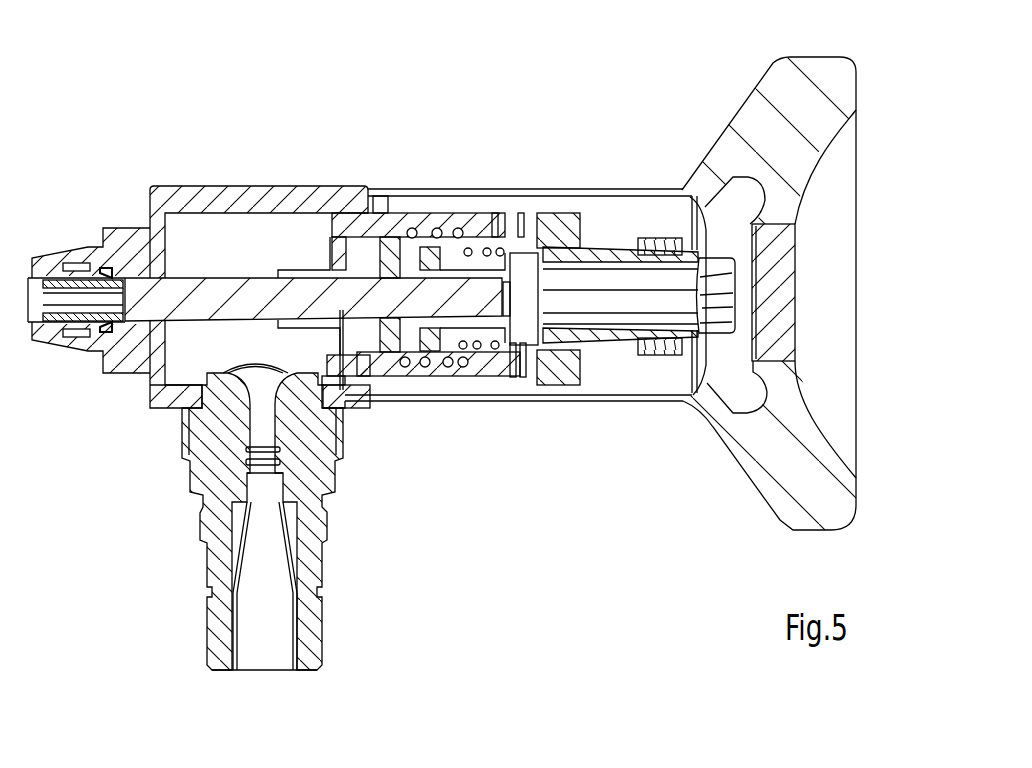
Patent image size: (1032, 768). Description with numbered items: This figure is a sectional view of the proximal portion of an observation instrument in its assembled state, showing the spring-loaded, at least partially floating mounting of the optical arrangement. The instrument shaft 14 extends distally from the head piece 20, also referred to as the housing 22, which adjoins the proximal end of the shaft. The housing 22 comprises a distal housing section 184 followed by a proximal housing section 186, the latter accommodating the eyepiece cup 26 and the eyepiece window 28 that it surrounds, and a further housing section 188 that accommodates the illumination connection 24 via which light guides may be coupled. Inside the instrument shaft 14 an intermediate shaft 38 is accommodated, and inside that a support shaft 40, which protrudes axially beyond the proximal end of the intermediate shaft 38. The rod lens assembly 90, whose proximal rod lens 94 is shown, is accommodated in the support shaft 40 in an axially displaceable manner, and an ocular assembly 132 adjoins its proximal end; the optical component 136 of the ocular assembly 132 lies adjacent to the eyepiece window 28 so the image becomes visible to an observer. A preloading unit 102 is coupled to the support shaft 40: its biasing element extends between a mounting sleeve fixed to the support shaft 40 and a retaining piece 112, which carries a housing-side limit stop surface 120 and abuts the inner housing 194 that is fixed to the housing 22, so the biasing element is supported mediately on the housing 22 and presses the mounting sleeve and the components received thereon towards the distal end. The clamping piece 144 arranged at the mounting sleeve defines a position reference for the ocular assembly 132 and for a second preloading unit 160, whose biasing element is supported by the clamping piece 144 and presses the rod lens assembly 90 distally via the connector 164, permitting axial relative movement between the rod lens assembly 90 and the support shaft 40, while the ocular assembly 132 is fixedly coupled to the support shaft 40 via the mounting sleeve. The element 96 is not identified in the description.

The instrument shaft 14 is at (55, 350).
The head piece 20 is at (593, 122).
The housing 22 is at (423, 233).
The illumination connection 24 is at (282, 614).
The eyepiece cup 26 is at (810, 308).
The eyepiece window 28 is at (772, 310).
The intermediate shaft 38 is at (155, 400).
The support shaft 40 is at (347, 394).
The rod lens assembly 90 is at (224, 272).
The proximal rod lens 94 is at (178, 290).
The inlet tube 96 is at (42, 262).
The preloading unit 102 is at (410, 388).
The retaining piece 112 is at (505, 366).
The housing-side limit stop surface 120 is at (503, 366).
The ocular assembly 132 is at (620, 236).
The optical component 136 is at (697, 402).
The clamping piece 144 is at (568, 212).
The preloading unit 160 is at (540, 286).
The connector 164 is at (473, 358).
The distal housing section 184 is at (318, 196).
The proximal housing section 186 is at (532, 198).
The housing section 188 is at (220, 618).
The inner housing 194 is at (488, 238).